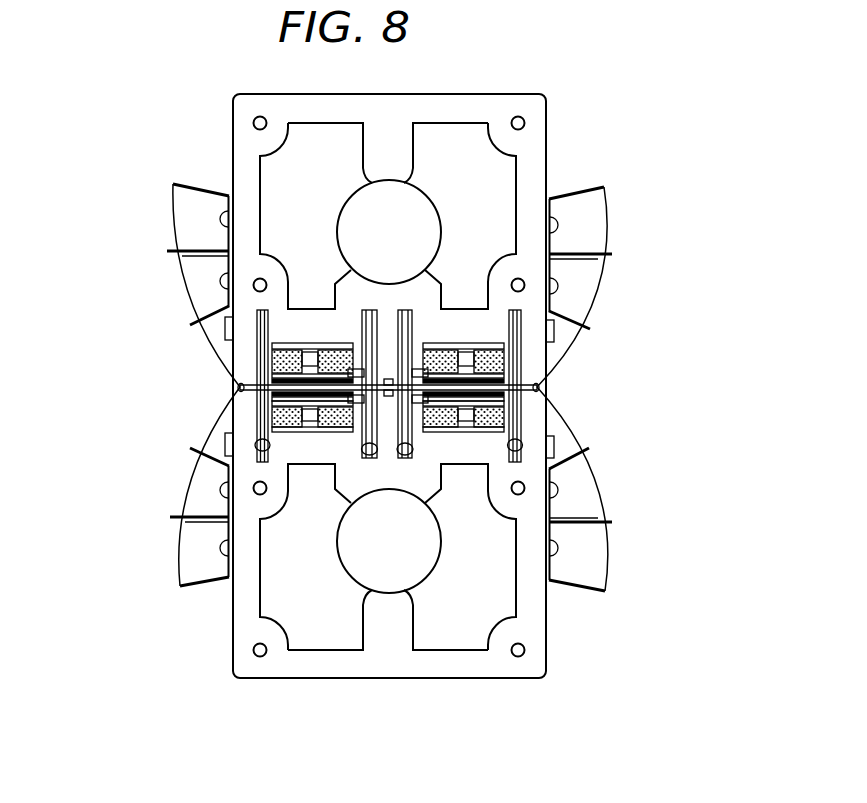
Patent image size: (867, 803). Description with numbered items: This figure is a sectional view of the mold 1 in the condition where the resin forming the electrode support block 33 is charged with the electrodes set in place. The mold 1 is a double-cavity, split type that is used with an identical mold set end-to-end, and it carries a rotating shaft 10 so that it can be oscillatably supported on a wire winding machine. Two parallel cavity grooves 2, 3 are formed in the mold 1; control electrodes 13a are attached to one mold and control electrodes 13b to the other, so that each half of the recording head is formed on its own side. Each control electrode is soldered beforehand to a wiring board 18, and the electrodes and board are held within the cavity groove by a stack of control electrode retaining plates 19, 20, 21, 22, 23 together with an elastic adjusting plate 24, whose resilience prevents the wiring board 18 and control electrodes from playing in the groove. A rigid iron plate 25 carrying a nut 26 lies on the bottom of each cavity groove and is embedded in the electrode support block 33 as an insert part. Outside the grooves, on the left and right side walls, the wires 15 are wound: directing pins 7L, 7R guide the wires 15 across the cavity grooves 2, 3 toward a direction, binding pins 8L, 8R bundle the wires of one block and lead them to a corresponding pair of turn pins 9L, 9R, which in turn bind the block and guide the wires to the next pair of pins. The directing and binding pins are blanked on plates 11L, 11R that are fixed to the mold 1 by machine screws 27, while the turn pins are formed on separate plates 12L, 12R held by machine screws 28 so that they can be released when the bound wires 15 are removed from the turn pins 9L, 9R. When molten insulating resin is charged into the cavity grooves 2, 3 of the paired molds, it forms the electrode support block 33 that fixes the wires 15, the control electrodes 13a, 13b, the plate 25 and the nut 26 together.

The mold 1 is at (733, 293).
The cavity groove 2 is at (272, 378).
The cavity groove 3 is at (520, 390).
The directing pin 7L is at (190, 326).
The directing pin 7R is at (588, 330).
The binding pin 8L is at (167, 251).
The binding pin 8R is at (612, 255).
The turn pin 9L is at (173, 183).
The turn pin 9R is at (600, 189).
The rotating shaft 10 is at (425, 208).
The plate 11L is at (221, 273).
The plate 11R is at (556, 285).
The plate 12L is at (223, 233).
The plate 12R is at (556, 216).
The control electrode 13a is at (355, 470).
The control electrode 13b is at (362, 345).
The wire 15 is at (190, 306).
The wiring board 18 is at (320, 432).
The control electrode retaining plate 19 is at (394, 386).
The control electrode retaining plate 20 is at (394, 386).
The control electrode retaining plate 21 is at (256, 445).
The control electrode retaining plate 22 is at (532, 515).
The control electrode retaining plate 23 is at (370, 462).
The adjusting plate 24 is at (532, 515).
The plate 25 is at (315, 345).
The nut 26 is at (290, 355).
The machine screw 27 is at (186, 282).
The machine screw 28 is at (222, 210).
The electrode support block 33 is at (278, 362).